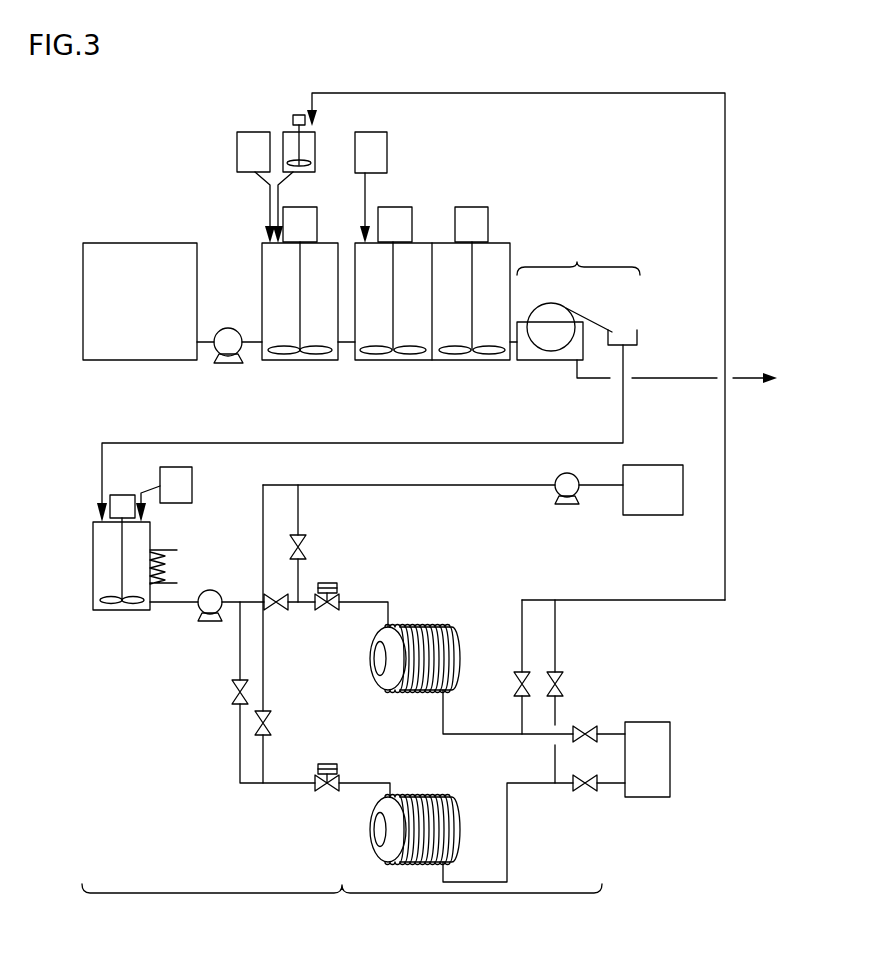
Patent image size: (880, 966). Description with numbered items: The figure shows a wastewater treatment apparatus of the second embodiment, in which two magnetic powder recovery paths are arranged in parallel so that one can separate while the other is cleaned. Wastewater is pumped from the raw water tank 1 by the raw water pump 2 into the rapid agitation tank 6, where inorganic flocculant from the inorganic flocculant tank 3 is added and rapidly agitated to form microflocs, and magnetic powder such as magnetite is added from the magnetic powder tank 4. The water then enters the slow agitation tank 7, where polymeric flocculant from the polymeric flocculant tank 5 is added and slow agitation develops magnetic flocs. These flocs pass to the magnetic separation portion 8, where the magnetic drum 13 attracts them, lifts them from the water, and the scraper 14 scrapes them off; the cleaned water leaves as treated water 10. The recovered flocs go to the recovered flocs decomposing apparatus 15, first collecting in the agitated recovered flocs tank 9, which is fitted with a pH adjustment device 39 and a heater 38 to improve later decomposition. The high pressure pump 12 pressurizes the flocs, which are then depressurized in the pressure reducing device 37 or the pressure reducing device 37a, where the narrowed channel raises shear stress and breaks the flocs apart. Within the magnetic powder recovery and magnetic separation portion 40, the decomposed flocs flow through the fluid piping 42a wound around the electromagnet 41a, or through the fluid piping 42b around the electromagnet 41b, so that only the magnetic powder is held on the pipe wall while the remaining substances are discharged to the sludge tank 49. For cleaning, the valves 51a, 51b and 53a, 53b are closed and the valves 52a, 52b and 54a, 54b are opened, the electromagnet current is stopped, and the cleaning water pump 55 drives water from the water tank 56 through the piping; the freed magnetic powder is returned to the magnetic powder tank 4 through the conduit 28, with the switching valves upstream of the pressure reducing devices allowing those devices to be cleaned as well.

The raw water tank 1 is at (106, 252).
The raw water pump 2 is at (224, 352).
The inorganic flocculant tank 3 is at (242, 150).
The magnetic powder tank 4 is at (288, 137).
The polymeric flocculant tank 5 is at (382, 150).
The rapid agitation tank 6 is at (332, 347).
The slow agitation tank 7 is at (425, 347).
The magnetic separation portion 8 is at (588, 252).
The recovered flocs tank 9 is at (97, 562).
The treated water 10 is at (694, 376).
The high pressure pump 12 is at (205, 612).
The magnetic drum 13 is at (542, 345).
The scraper 14 is at (598, 318).
The recovered flocs decomposing apparatus 15 is at (358, 938).
The conduit 28 is at (725, 212).
The pressure reducing device 37 is at (333, 764).
The pressure reducing device 37a is at (333, 582).
The heater 38 is at (172, 566).
The pH adjustment device 39 is at (193, 485).
The magnetic powder recovery and magnetic separation portion 40 is at (268, 823).
The electromagnet 41a is at (368, 643).
The electromagnet 41b is at (368, 813).
The fluid piping 42a is at (420, 625).
The fluid piping 42b is at (420, 795).
The sludge tank 49 is at (672, 738).
The valve 51a is at (283, 612).
The valve 51b is at (232, 695).
The switching valve 52a is at (305, 540).
The switching valve 52b is at (272, 720).
The valve 53a is at (590, 723).
The valve 53b is at (585, 793).
The valve 54a is at (515, 675).
The valve 54b is at (562, 678).
The cleaning water pump 55 is at (556, 494).
The water tank 56 is at (648, 512).